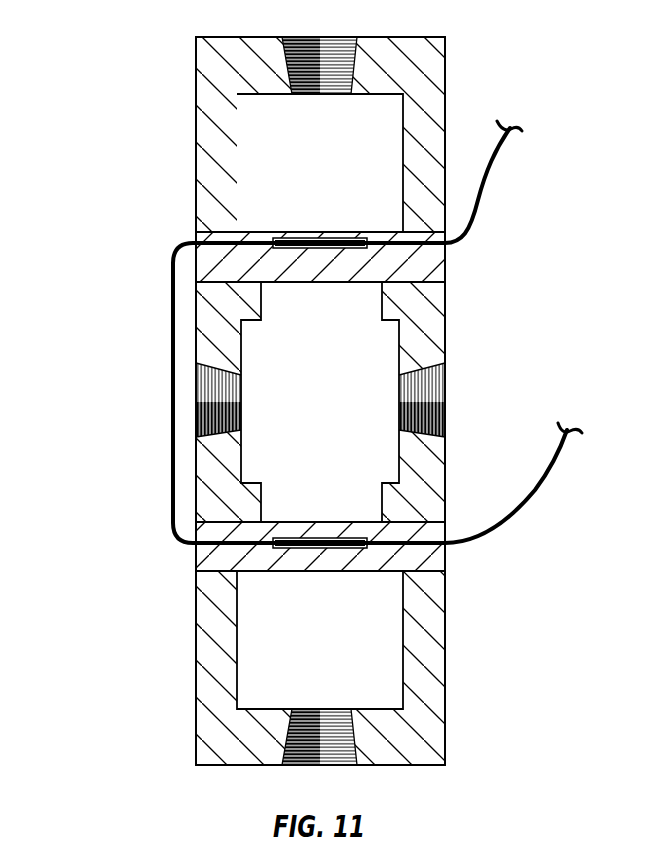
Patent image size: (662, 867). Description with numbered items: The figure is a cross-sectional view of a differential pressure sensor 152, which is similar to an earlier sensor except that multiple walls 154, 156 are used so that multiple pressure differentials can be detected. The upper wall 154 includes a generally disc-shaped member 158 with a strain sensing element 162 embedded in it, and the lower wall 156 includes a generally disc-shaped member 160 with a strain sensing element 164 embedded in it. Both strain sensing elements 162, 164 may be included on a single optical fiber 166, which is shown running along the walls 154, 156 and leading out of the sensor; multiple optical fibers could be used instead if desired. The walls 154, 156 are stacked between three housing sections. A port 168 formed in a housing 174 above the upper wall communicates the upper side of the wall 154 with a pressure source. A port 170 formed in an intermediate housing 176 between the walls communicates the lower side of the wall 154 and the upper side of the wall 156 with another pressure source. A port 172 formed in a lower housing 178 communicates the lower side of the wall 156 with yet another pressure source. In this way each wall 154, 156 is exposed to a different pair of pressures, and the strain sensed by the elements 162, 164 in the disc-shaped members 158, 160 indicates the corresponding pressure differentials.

The differential pressure sensor 152 is at (152, 68).
The wall 154 is at (452, 256).
The wall 156 is at (452, 556).
The disc-shaped member 158 is at (240, 263).
The disc-shaped member 160 is at (237, 560).
The strain sensing element 162 is at (313, 240).
The strain sensing element 164 is at (327, 548).
The optical fiber 166 is at (497, 184).
The port 168 is at (342, 62).
The port 170 is at (446, 385).
The port 172 is at (345, 745).
The housing 174 is at (196, 177).
The intermediate housing 176 is at (446, 455).
The lower housing 178 is at (196, 625).